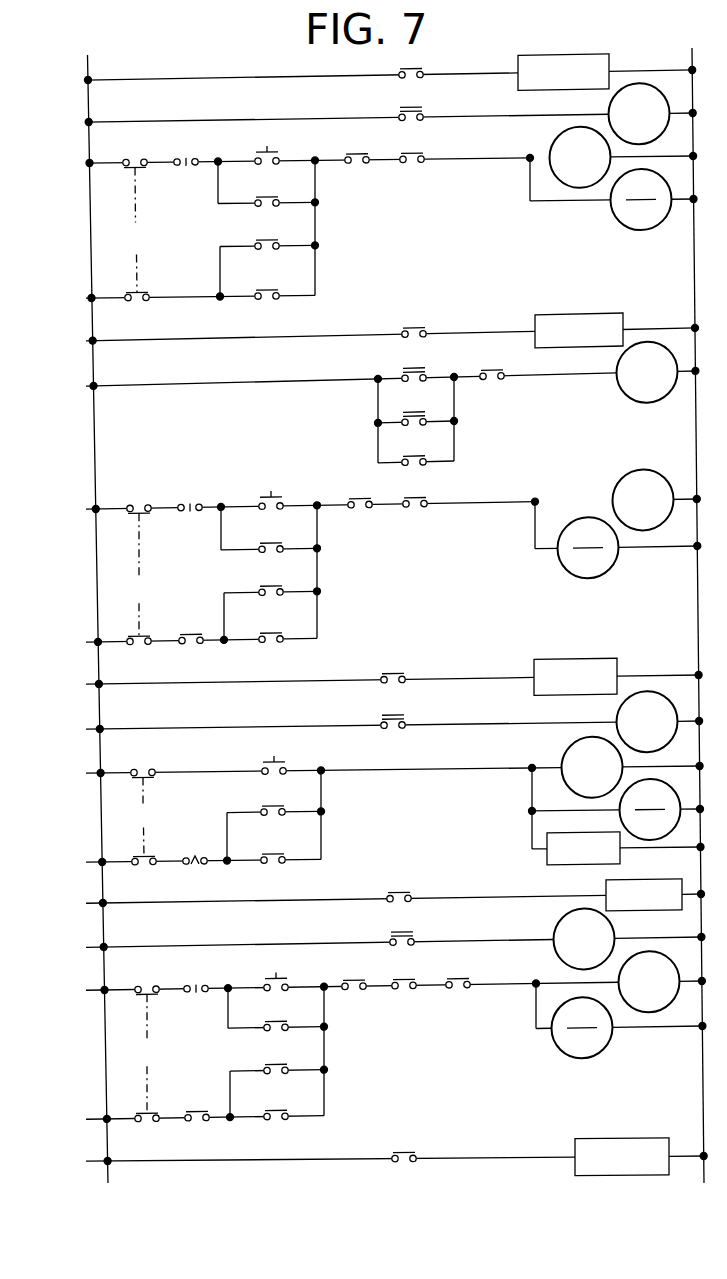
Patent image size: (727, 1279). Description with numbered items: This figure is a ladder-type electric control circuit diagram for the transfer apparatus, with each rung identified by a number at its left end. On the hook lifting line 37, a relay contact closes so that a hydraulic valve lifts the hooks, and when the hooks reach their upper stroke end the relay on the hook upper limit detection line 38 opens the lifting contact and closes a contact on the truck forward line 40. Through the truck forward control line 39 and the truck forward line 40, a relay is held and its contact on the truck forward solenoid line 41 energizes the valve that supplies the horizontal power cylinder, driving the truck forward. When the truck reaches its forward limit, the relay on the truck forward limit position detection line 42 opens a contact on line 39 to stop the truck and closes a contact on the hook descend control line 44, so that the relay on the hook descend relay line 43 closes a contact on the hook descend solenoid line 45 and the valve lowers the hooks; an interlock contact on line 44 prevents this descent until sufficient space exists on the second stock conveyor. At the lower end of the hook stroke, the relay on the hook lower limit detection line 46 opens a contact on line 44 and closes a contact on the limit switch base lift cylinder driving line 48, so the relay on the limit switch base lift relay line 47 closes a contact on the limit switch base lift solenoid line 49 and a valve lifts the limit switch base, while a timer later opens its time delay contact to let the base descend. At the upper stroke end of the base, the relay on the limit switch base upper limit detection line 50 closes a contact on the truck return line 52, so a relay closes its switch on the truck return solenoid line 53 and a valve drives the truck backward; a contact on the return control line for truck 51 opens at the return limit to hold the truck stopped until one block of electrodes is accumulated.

The hook lifting line 37 is at (364, 69).
The hook upper limit detection line 38 is at (365, 116).
The truck forward control line 39 is at (365, 210).
The truck forward line 40 is at (175, 289).
The truck forward solenoid line 41 is at (367, 328).
The truck forward limit position detection line 42 is at (368, 406).
The hook descend relay line 43 is at (369, 553).
The hook descend control line 44 is at (178, 633).
The hook descend solenoid line 45 is at (371, 673).
The hook lower limit detection line 46 is at (372, 724).
The limit switch base lift relay line 47 is at (373, 801).
The limit switch base lift cylinder driving line 48 is at (182, 851).
The limit switch base lift solenoid line 49 is at (374, 891).
The limit switch base upper limit detection line 50 is at (375, 941).
The return control line for truck 51 is at (376, 1033).
The truck return line 52 is at (185, 1110).
The truck return solenoid line 53 is at (377, 1153).